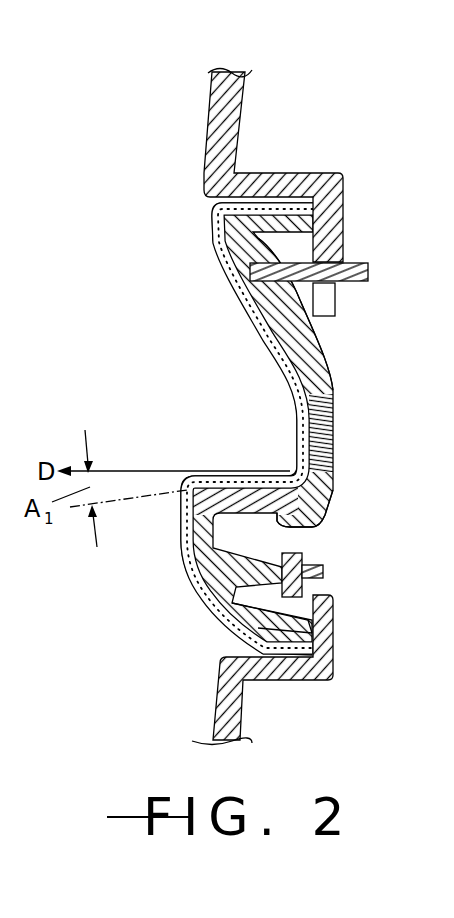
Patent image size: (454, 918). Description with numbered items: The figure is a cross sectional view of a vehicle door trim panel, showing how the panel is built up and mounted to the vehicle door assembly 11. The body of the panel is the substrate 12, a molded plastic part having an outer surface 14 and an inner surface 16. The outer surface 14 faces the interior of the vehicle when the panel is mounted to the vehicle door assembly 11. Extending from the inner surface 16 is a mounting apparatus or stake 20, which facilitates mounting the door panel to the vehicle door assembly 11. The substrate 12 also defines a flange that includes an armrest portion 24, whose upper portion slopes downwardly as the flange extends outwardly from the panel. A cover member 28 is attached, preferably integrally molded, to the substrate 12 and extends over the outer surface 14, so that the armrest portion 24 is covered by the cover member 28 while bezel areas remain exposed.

The vehicle door assembly 11 is at (308, 173).
The substrate 12 is at (313, 364).
The outer surface 14 is at (314, 331).
The inner surface 16 is at (334, 413).
The mounting apparatus or stake 20 is at (350, 263).
The armrest portion 24 is at (316, 518).
The cover member 28 is at (210, 600).